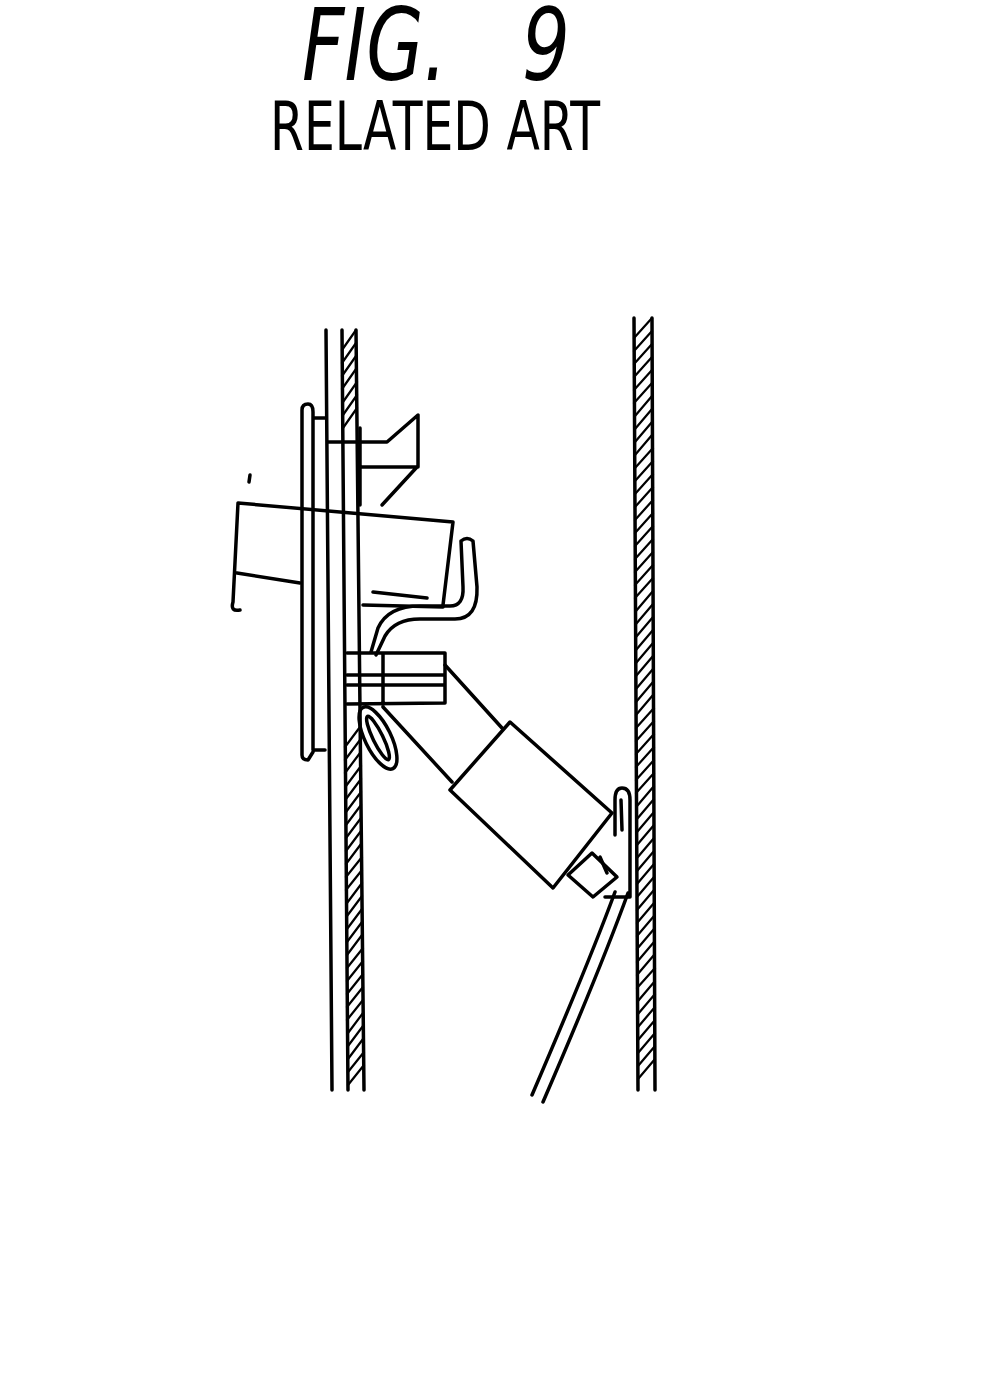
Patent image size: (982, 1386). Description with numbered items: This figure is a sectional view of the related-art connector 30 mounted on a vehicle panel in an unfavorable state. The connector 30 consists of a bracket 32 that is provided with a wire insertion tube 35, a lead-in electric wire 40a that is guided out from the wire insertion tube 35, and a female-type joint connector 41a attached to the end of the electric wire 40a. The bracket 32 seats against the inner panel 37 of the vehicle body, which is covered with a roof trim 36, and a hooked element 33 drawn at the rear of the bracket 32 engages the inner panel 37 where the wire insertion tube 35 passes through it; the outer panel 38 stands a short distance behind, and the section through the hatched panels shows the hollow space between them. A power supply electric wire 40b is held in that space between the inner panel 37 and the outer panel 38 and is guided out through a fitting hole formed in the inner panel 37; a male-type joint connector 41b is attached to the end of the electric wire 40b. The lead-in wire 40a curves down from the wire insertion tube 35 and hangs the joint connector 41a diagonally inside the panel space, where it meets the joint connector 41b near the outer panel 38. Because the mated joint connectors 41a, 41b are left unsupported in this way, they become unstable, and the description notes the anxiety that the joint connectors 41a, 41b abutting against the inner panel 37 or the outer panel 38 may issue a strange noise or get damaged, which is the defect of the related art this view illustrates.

The connector 30 is at (195, 593).
The bracket 32 is at (300, 467).
The engaging claw 33 is at (362, 488).
The wire insertion tube 35 is at (410, 535).
The roof trim 36 is at (328, 898).
The inner panel 37 is at (365, 1003).
The outer panel 38 is at (655, 1013).
The lead-in electric wire 40a is at (505, 625).
The power supply electric wire 40b is at (583, 1043).
The joint connector (female type) 41a is at (537, 768).
The joint connector (male type) 41b is at (600, 858).